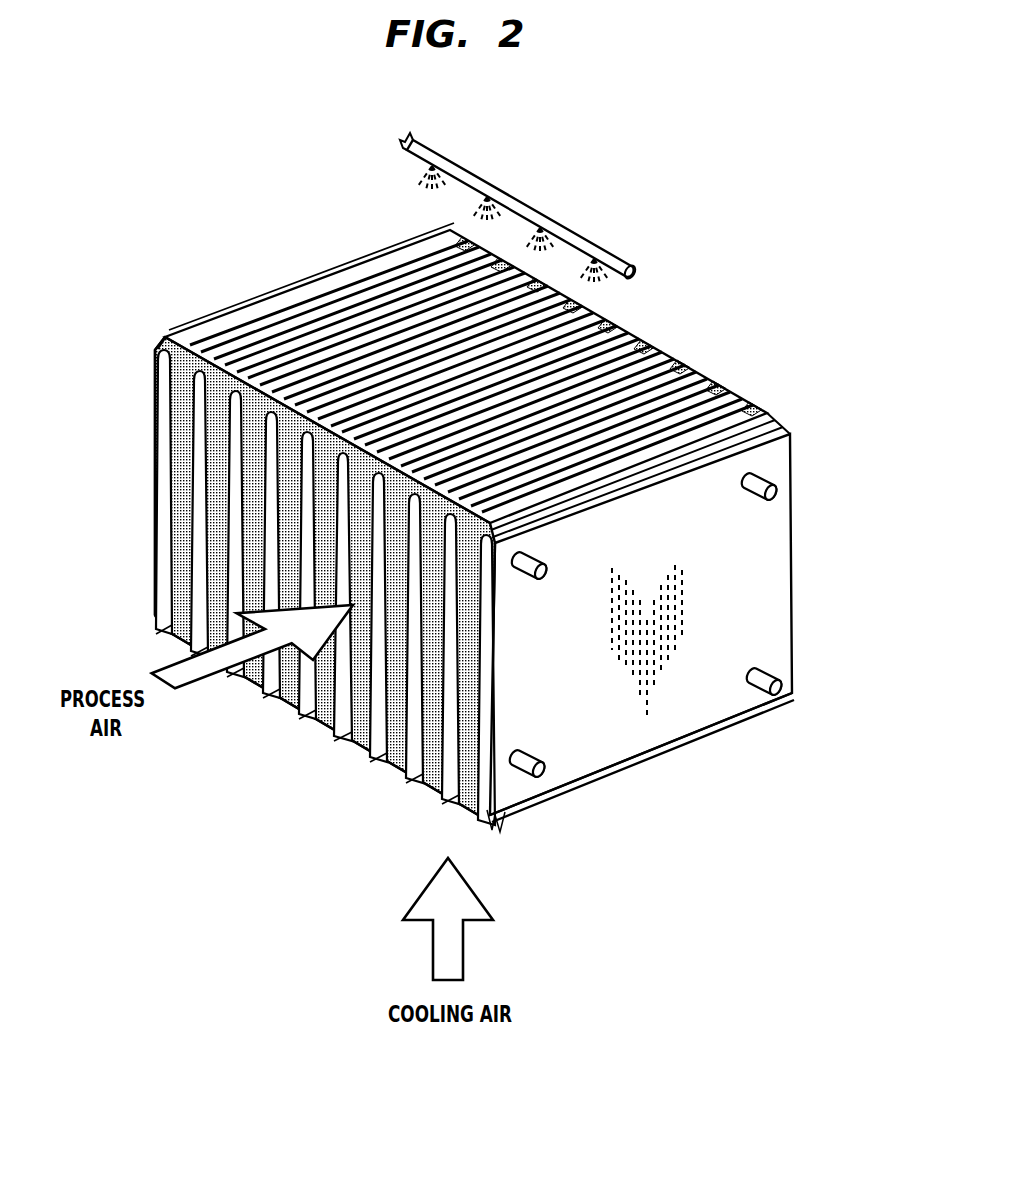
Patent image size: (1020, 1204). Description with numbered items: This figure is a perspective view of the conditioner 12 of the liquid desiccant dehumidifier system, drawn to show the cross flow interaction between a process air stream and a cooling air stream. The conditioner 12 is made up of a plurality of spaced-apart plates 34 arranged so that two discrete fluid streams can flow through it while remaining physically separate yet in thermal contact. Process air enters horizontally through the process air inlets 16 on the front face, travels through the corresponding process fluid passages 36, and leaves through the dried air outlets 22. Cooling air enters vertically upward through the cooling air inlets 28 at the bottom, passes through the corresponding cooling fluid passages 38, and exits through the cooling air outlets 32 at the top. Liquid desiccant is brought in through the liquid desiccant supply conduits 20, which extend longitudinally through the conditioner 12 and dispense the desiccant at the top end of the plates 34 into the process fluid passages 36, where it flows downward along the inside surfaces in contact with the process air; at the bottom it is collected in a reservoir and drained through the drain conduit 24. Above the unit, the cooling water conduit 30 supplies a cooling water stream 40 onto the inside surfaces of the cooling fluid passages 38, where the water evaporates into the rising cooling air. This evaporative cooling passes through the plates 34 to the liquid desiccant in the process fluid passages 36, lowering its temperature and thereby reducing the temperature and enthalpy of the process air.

The conditioner 12 is at (784, 248).
The process air inlets 16 is at (232, 530).
The liquid desiccant supply conduits 20 is at (772, 482).
The dried air outlets 22 is at (797, 518).
The drain conduit 24 is at (775, 676).
The cooling air inlets 28 is at (672, 758).
The cooling water conduit 30 is at (522, 217).
The cooling air outlets 32 is at (627, 398).
The plates 34 is at (507, 808).
The process fluid passages 36 is at (270, 463).
The cooling fluid passages 38 is at (692, 380).
The cooling water stream 40 is at (425, 184).